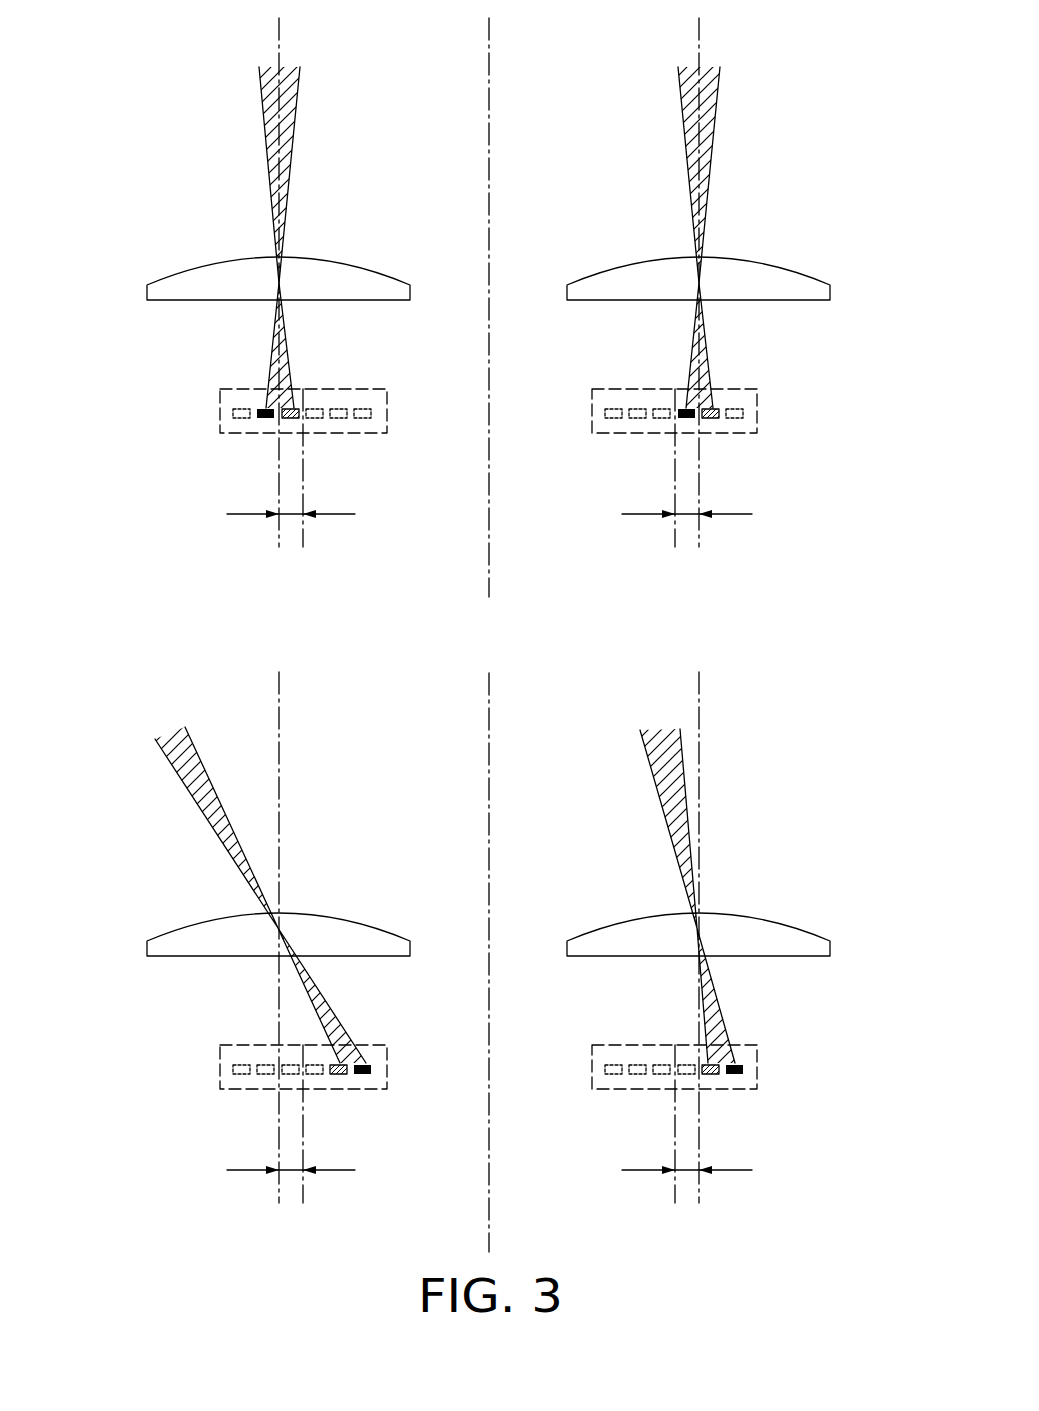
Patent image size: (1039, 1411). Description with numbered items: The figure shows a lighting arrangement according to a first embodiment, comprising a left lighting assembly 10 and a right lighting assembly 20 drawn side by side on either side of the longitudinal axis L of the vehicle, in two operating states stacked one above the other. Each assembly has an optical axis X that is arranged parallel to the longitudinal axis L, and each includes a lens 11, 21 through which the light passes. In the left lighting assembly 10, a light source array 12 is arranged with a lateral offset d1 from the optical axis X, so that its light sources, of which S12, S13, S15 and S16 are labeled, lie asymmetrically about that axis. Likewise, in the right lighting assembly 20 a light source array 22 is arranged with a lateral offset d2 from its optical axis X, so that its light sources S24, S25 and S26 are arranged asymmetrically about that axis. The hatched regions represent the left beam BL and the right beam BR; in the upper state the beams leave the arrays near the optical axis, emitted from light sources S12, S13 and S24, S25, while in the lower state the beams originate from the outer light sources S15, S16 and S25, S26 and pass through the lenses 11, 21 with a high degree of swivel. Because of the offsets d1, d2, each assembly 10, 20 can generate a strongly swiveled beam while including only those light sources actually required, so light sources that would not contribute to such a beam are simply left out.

The left lighting assembly 10 is at (138, 128).
The left lens 11 is at (170, 292).
The light source array 12 is at (220, 415).
The right lighting assembly 20 is at (840, 128).
The right lens 21 is at (808, 292).
The light source array 22 is at (757, 410).
The optical axis X is at (282, 48).
The longitudinal axis of the vehicle L is at (490, 545).
The left light beam BL is at (145, 815).
The right light beam BR is at (718, 108).
The light source S12 is at (262, 419).
The light source S13 is at (302, 408).
The light source S15 is at (350, 1075).
The light source S16 is at (373, 1064).
The light source S24 is at (677, 408).
The light source S25 is at (718, 419).
The light source S26 is at (745, 1064).
The lateral offset d1 is at (291, 799).
The lateral offset d2 is at (687, 799).